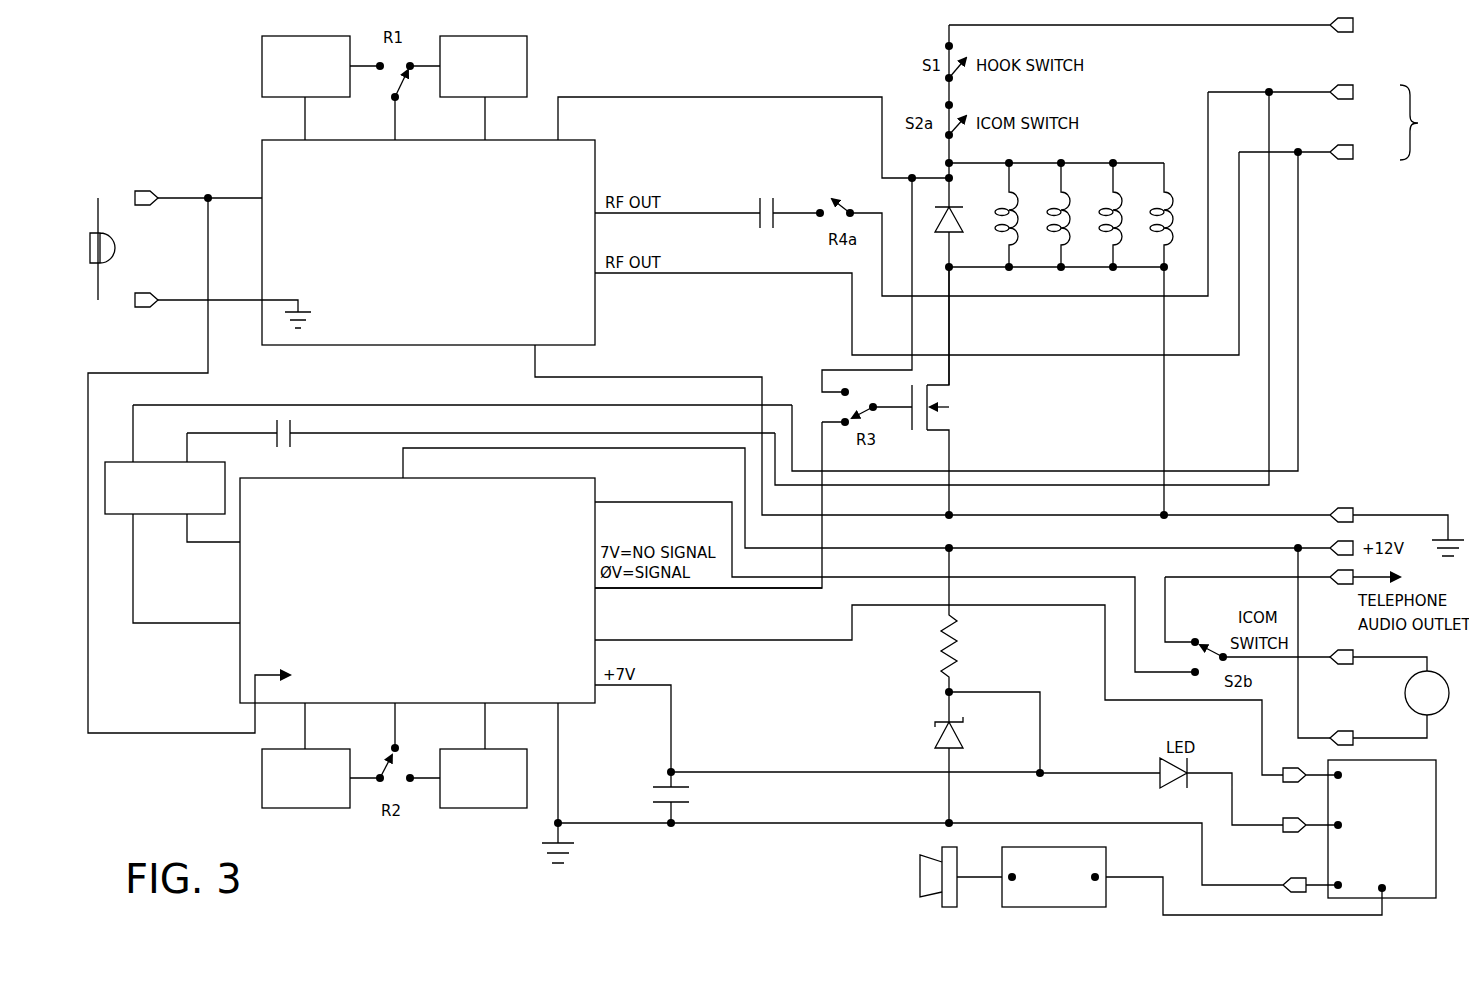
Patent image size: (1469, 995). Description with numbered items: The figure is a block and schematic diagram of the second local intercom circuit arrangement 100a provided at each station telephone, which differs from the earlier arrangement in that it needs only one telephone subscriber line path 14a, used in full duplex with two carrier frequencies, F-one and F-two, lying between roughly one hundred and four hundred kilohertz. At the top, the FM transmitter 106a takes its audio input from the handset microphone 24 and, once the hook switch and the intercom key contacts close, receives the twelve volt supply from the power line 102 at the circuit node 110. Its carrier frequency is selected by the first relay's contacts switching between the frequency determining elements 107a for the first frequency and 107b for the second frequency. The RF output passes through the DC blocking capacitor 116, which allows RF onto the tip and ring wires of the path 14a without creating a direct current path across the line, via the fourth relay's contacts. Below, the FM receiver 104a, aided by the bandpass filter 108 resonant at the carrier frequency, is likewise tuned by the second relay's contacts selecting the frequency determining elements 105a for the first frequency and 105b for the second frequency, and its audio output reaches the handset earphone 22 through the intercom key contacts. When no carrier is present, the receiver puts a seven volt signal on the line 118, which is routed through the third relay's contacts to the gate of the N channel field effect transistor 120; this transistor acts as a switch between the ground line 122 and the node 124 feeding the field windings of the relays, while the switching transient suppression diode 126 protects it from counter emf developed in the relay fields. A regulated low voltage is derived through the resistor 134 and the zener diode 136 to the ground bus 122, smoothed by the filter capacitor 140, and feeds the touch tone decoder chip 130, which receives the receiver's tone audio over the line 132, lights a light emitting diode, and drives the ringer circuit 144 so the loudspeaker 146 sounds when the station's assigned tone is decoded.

The local intercom circuit arrangement 100a is at (178, 761).
The 12 volt power supply line 102 is at (1173, 28).
The FM receiver 104a is at (417, 590).
The frequency determining element (F1) of receiver 105a is at (265, 787).
The frequency determining element (F2) of receiver 105b is at (468, 808).
The FM transmitter 106a is at (428, 242).
The frequency determining element (F1) of transmitter 107a is at (262, 79).
The frequency determining element (F2) of transmitter 107b is at (527, 65).
The bandpass filter 108 is at (167, 514).
The circuit node 110 is at (662, 97).
The DC blocking capacitor 116 is at (774, 204).
The 7 volt signal line 118 is at (645, 592).
The N channel field effect transistor 120 is at (965, 427).
The ground line 122 is at (1313, 516).
The node 124 is at (950, 337).
The switching transient suppression diode 126 is at (966, 224).
The touch tone decoder chip 130 is at (1343, 829).
The tone audio output line 132 is at (1105, 664).
The resistor 134 is at (940, 651).
The zener diode 136 is at (935, 738).
The filter capacitor 140 is at (654, 792).
The ringer circuit 144 is at (1098, 855).
The loudspeaker 146 is at (920, 858).
The telephone subscriber line path 14a is at (1331, 123).
The handset earphone 22 is at (1432, 706).
The handset microphone 24 is at (100, 250).